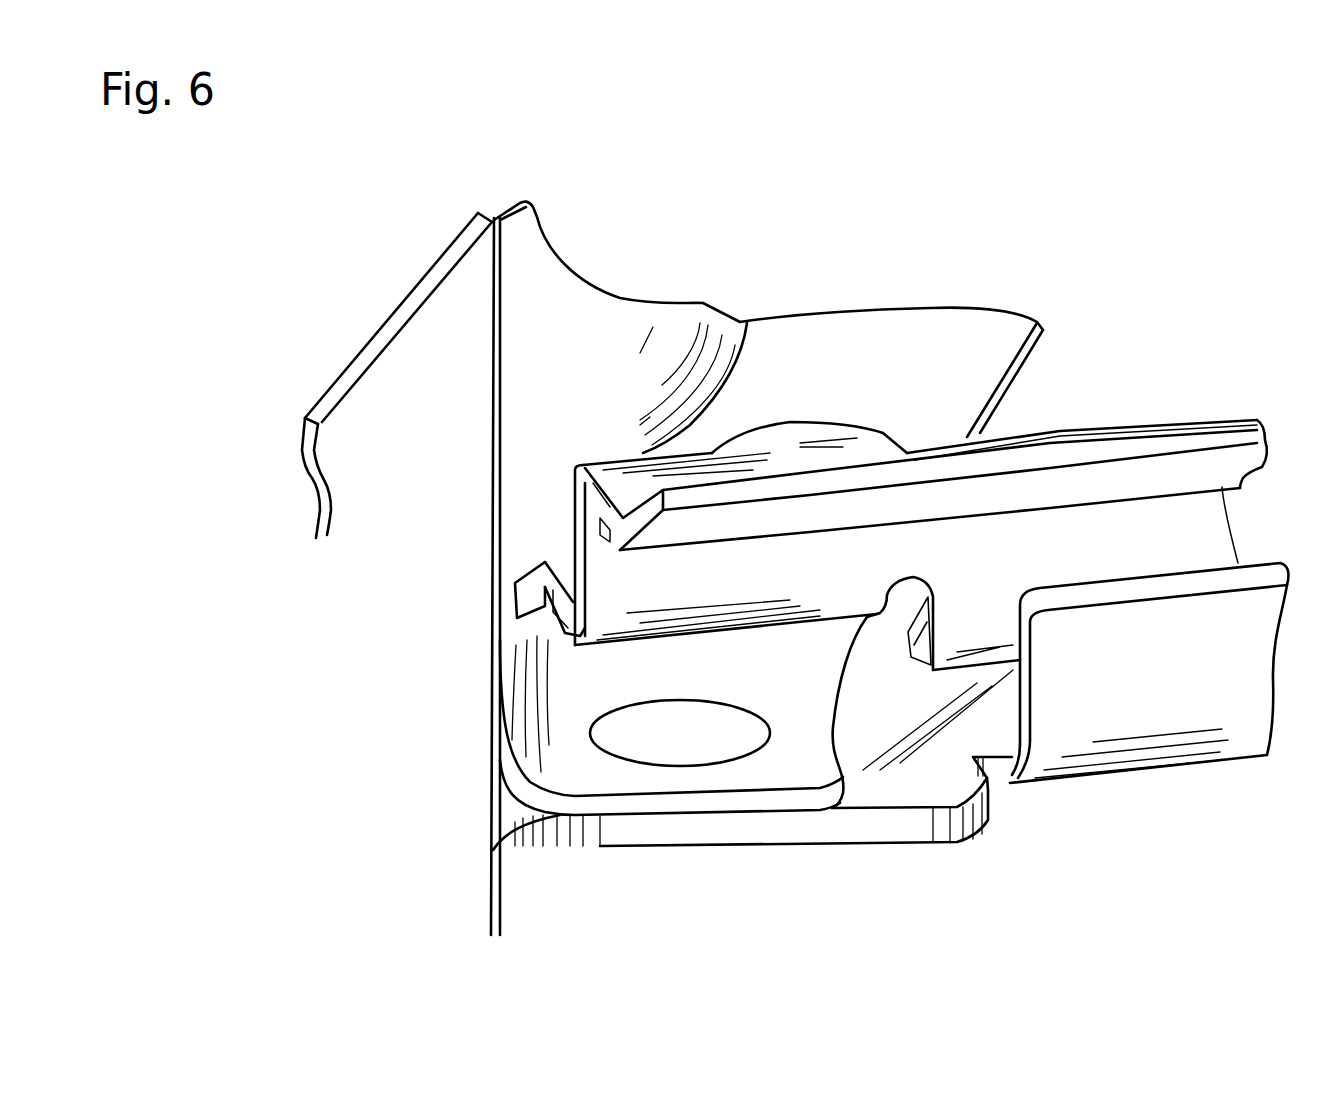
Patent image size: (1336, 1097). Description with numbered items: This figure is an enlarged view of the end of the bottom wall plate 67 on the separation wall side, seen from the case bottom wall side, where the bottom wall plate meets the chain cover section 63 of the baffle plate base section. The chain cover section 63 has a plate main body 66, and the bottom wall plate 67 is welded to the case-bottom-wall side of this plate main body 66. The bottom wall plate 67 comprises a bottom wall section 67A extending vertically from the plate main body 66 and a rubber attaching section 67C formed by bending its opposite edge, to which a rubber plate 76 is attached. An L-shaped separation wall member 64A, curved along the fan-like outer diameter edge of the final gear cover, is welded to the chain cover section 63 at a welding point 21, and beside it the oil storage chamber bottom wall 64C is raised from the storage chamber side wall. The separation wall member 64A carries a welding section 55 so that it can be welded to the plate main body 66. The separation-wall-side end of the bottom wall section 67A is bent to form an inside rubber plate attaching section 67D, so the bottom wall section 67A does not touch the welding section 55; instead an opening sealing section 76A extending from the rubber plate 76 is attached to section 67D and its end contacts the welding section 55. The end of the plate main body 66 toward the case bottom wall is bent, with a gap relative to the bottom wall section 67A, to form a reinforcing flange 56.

The welding point 21 is at (633, 738).
The welding section 55 is at (975, 360).
The reinforcing flange 56 is at (1128, 730).
The chain cover section 63 is at (963, 845).
The separation wall member 64A is at (577, 293).
The oil storage chamber bottom wall 64C is at (447, 300).
The plate main body 66 is at (883, 793).
The bottom wall plate 67 is at (807, 622).
The bottom wall section 67A is at (680, 610).
The rubber attaching section 67C is at (603, 503).
The inside rubber plate attaching section 67D is at (543, 632).
The rubber plate 76 is at (1145, 455).
The opening sealing section 76A is at (540, 570).